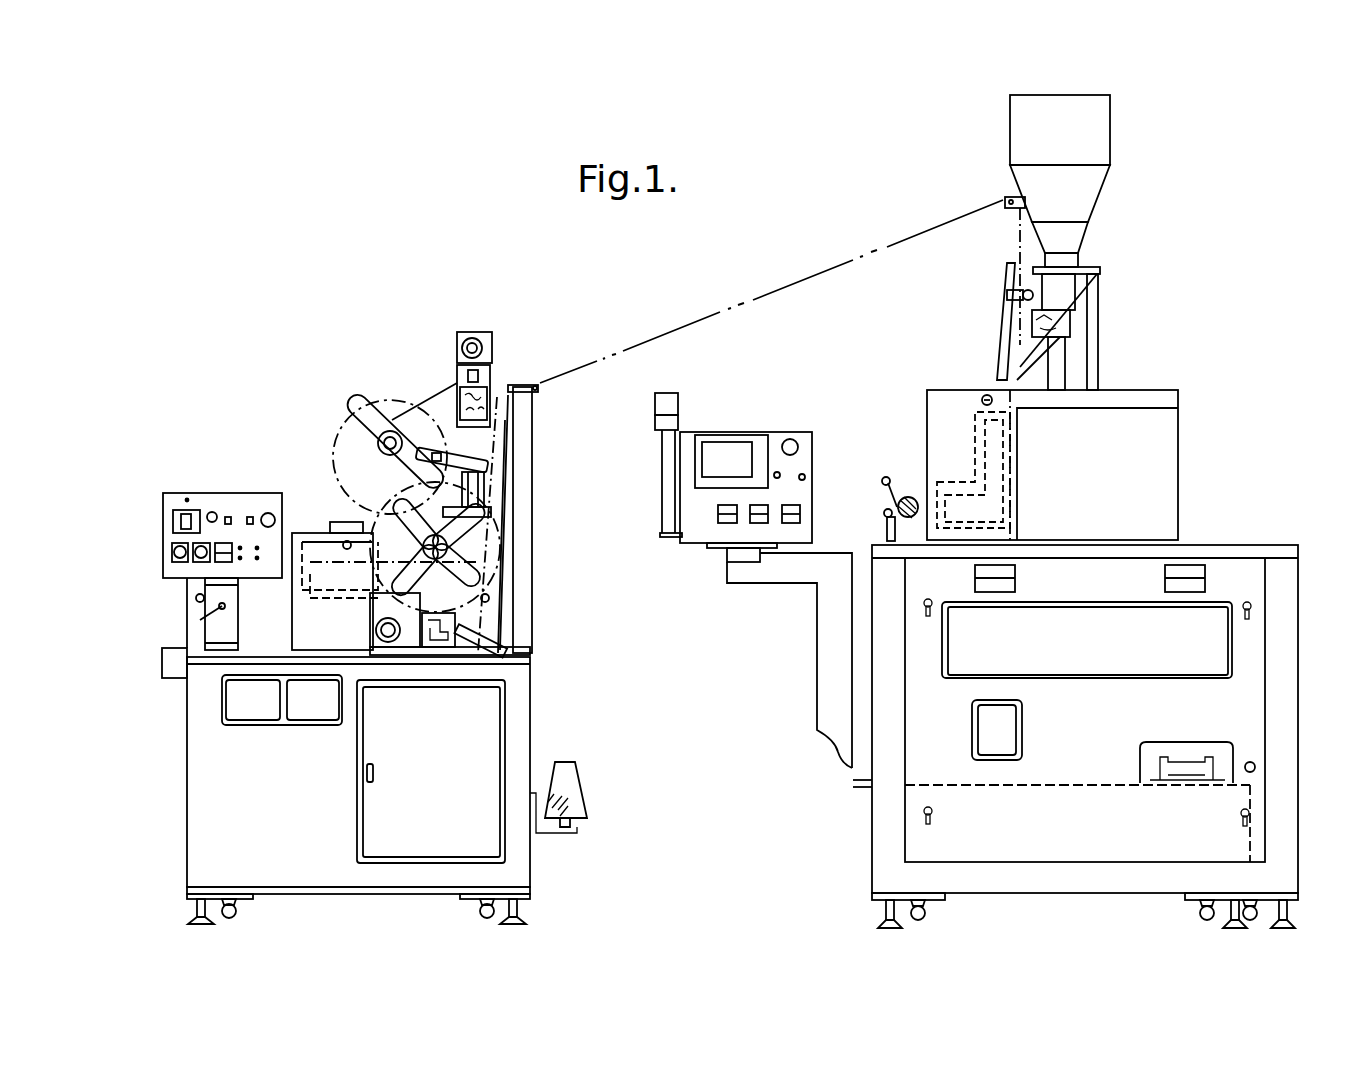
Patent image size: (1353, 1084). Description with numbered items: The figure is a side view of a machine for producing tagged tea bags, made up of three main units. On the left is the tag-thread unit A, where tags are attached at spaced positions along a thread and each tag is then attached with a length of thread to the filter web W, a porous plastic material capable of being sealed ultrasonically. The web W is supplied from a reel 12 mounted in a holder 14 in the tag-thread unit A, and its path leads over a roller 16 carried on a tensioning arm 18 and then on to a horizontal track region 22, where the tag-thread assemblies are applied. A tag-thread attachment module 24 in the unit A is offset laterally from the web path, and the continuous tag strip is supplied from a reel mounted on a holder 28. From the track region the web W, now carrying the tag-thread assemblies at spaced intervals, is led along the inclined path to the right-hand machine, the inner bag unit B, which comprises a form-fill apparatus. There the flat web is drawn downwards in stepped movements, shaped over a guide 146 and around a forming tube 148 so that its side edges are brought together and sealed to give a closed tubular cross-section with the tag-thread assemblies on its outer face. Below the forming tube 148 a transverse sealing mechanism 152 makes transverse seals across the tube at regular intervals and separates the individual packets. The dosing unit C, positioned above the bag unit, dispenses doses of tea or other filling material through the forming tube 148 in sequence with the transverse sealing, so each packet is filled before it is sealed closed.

The reel 12 is at (380, 390).
The holder 14 is at (398, 400).
The roller 16 is at (497, 467).
The tensioning arm 18 is at (478, 455).
The horizontal track region 22 is at (323, 563).
The tag-thread attachment module 24 is at (287, 607).
The holder 28 is at (487, 572).
The guide 146 is at (1003, 333).
The forming tube 148 is at (1020, 468).
The transverse sealing mechanism 152 is at (917, 477).
The tag-thread unit A is at (304, 337).
The inner bag unit B is at (1145, 247).
The dosing unit C is at (1150, 345).
The filter web W is at (772, 293).